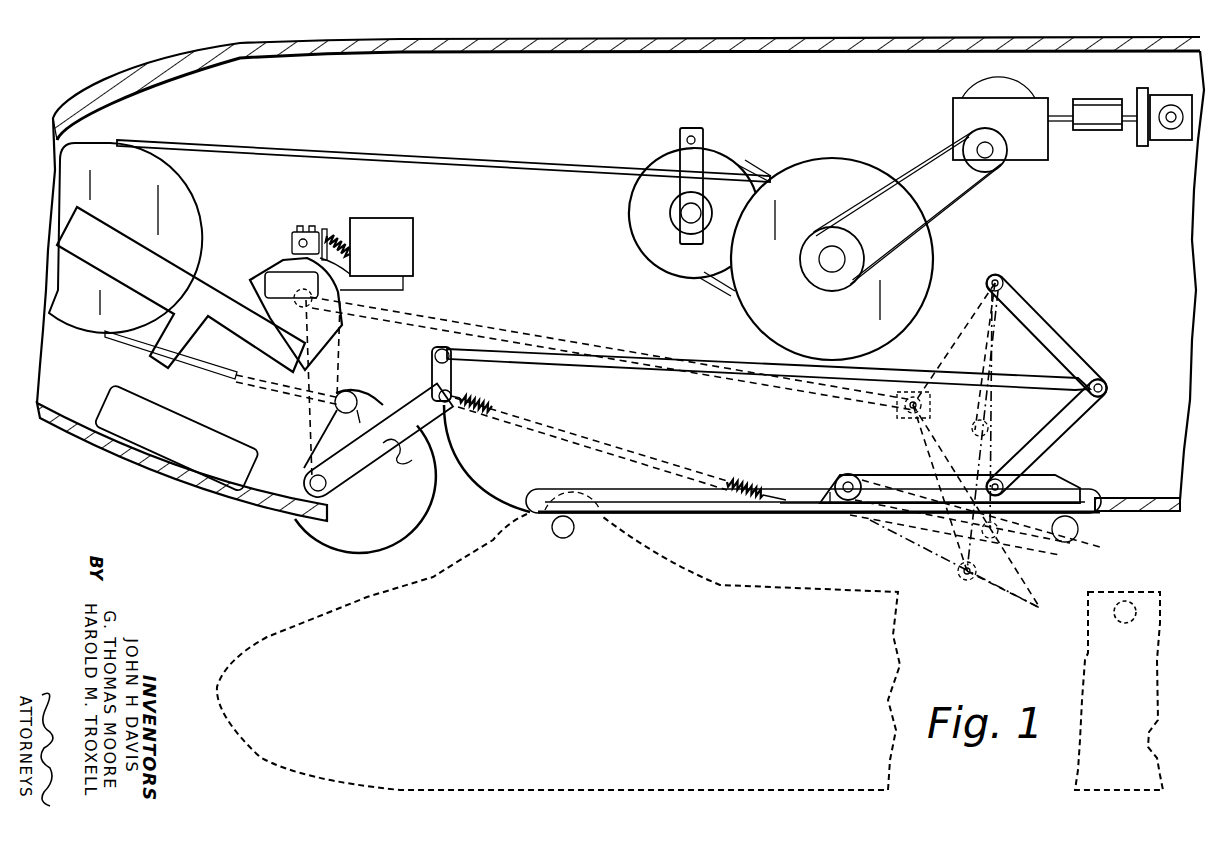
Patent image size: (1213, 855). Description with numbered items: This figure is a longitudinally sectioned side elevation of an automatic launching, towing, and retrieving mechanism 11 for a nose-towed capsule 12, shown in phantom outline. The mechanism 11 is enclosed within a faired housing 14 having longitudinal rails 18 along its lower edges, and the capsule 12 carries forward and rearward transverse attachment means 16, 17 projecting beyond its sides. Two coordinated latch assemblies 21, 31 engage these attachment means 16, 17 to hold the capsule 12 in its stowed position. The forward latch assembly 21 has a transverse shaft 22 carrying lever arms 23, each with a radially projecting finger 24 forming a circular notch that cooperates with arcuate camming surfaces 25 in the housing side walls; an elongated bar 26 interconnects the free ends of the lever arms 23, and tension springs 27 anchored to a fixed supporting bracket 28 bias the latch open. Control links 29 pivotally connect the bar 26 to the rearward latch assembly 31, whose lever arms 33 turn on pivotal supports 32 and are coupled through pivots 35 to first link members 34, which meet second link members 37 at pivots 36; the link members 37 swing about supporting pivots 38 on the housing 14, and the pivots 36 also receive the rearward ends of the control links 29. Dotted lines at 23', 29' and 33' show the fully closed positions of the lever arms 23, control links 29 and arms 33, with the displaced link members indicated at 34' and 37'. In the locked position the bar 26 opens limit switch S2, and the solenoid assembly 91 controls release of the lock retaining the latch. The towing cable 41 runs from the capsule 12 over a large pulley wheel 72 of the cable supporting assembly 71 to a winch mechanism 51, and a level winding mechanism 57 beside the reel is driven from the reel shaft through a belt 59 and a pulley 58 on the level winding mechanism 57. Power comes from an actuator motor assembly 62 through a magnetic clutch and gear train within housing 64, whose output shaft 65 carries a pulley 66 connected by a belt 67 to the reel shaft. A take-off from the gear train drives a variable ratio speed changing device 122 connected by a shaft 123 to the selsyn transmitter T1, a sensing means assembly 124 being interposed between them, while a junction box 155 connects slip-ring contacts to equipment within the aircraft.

The launching, towing, and retrieving mechanism 11 is at (1160, 514).
The capsule 12 is at (885, 655).
The faired housing 14 is at (140, 470).
The forward attachment means 16 is at (352, 393).
The rearward attachment means 17 is at (1080, 529).
The longitudinally extending rails 18 is at (710, 500).
The latch assembly 21 is at (377, 490).
The transversely extending shaft 22 is at (308, 481).
The lever arms 23 is at (470, 418).
The lever arms in fully closed position 23' is at (312, 383).
The radially projecting finger 24 is at (400, 505).
The arcuate camming surfaces 25 is at (478, 478).
The elongated bar 26 is at (455, 377).
The tension springs 27 is at (585, 440).
The fixed supporting bracket 28 is at (797, 488).
The control links 29 is at (768, 364).
The control links in closed position 29' is at (611, 353).
The latch assembly 31 is at (1050, 471).
The pivotal supports 32 is at (848, 502).
The lever arms 33 is at (985, 476).
The lever arms in closed position 33' is at (975, 449).
The first link members 34 is at (1046, 437).
The alternate pivot position 34' is at (894, 419).
The pivot 35 is at (1000, 475).
The pivot 36 is at (1105, 378).
The second link members 37 is at (1059, 335).
The alternate position of link 37' is at (954, 352).
The supporting pivots 38 is at (1000, 276).
The towing cable 41 is at (480, 152).
The winch mechanism 51 is at (826, 156).
The level winding mechanism 57 is at (672, 212).
The pulley 58 is at (632, 202).
The belt 59 is at (722, 287).
The actuator motor assembly 62 is at (990, 78).
The housing 64 is at (1045, 103).
The output shaft 65 is at (1000, 148).
The pulley 66 is at (990, 162).
The belt 67 is at (922, 172).
The cable supporting assembly 71 is at (120, 135).
The pulley wheel 72 is at (190, 208).
The solenoid assembly 91 is at (400, 216).
The variable ratio speed changing device 122 is at (1100, 132).
The shaft 123 is at (1135, 100).
The sensing means assembly 124 is at (1153, 104).
The junction box 155 is at (185, 453).
The limit switch S2 is at (280, 268).
The transmitter T1 is at (1162, 140).